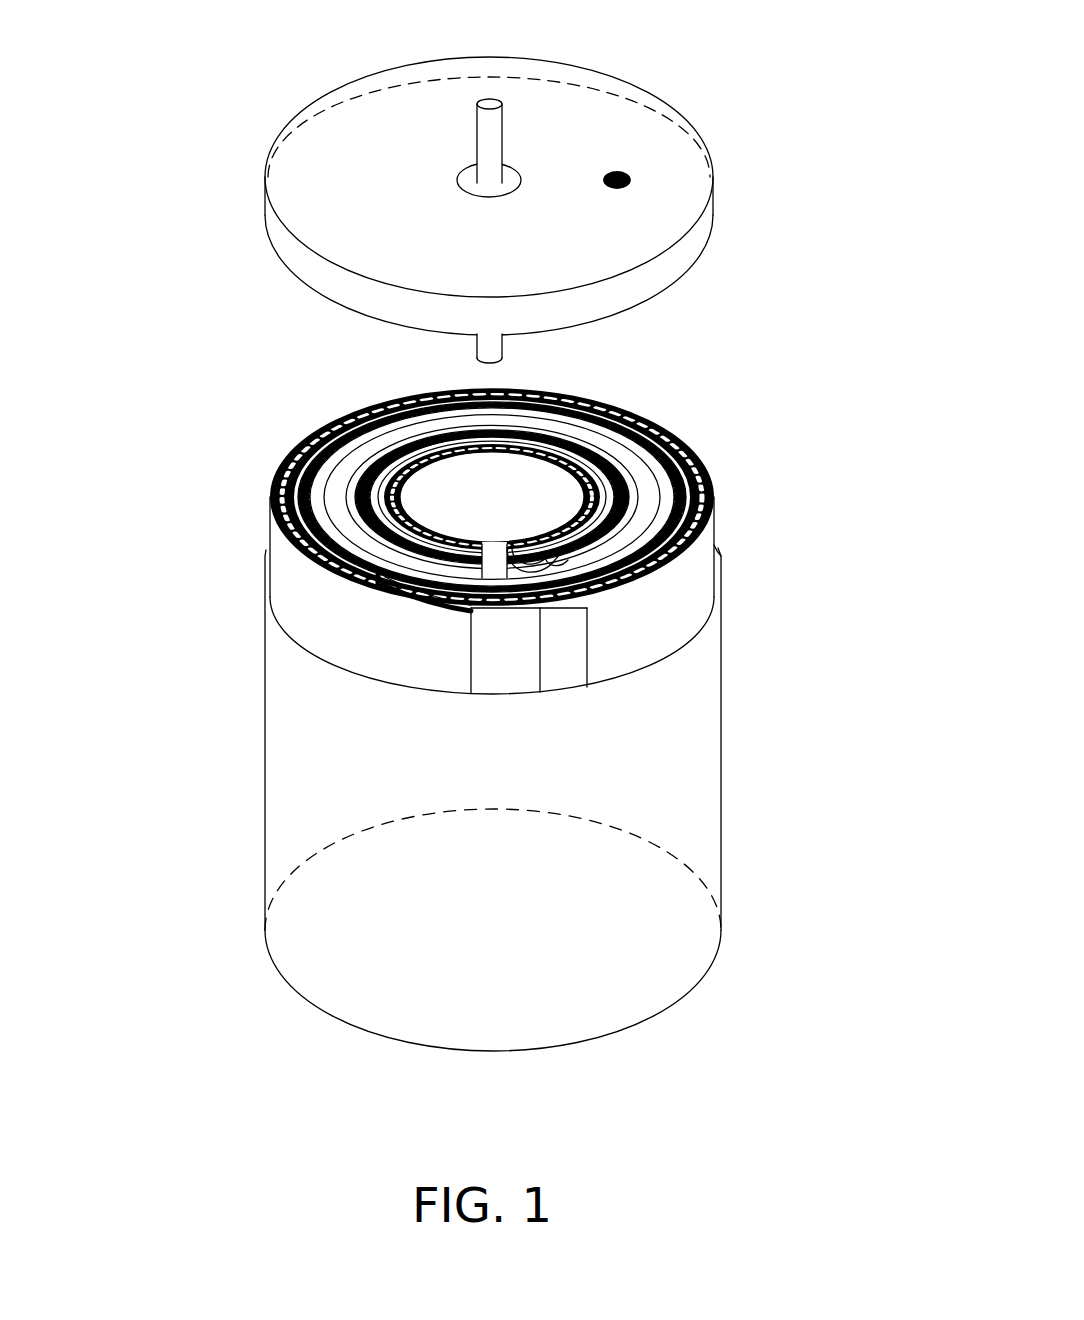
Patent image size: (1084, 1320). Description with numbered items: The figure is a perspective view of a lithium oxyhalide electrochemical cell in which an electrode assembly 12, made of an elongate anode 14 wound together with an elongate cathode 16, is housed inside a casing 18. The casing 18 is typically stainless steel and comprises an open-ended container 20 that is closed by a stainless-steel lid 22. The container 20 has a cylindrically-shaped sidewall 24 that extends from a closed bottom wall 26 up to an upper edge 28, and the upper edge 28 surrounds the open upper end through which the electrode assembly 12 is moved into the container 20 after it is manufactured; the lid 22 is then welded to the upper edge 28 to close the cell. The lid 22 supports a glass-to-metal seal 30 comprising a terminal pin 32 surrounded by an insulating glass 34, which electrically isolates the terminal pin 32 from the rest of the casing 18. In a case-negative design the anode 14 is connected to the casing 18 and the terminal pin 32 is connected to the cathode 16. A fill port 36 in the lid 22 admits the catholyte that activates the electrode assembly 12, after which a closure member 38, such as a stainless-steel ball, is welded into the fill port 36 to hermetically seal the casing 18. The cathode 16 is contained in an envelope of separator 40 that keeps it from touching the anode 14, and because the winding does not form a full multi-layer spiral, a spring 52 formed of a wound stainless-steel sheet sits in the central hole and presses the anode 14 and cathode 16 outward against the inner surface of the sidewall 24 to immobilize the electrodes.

The electrode assembly 12 is at (472, 560).
The anode 14 is at (500, 560).
The cathode 16 is at (492, 497).
The casing 18 is at (519, 798).
The container 20 is at (268, 806).
The lid 22 is at (265, 213).
The sidewall 24 is at (722, 809).
The bottom wall 26 is at (677, 945).
The upper edge 28 is at (721, 577).
The glass-to-metal seal 30 is at (481, 188).
The terminal pin 32 is at (518, 158).
The insulating glass 34 is at (457, 183).
The fill port 36 is at (632, 180).
The closure member 38 is at (616, 173).
The separator 40 is at (567, 662).
The spring 52 is at (420, 533).